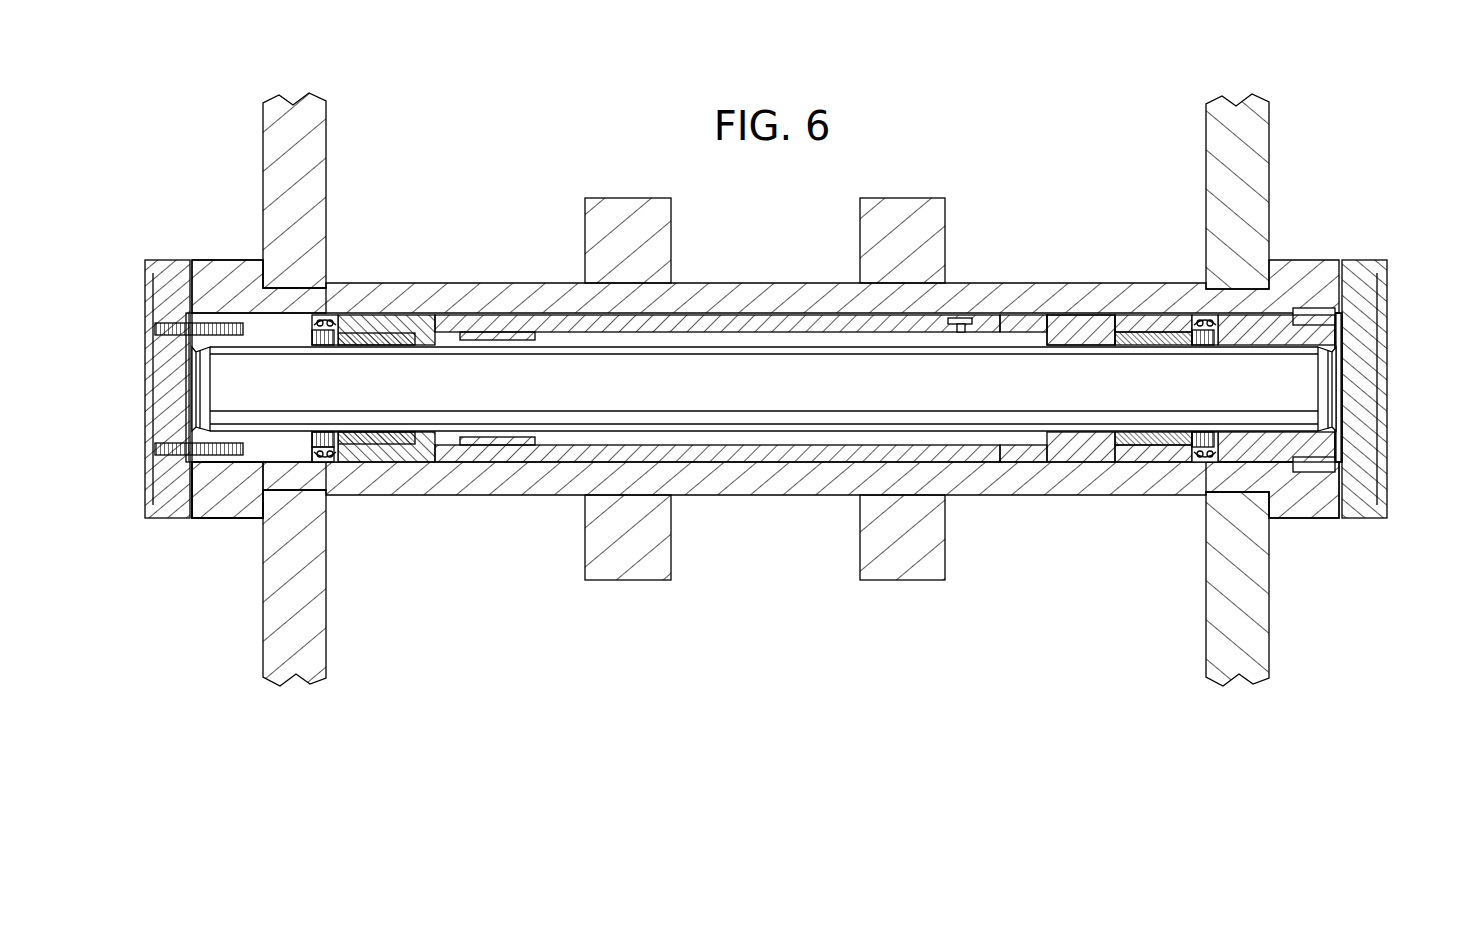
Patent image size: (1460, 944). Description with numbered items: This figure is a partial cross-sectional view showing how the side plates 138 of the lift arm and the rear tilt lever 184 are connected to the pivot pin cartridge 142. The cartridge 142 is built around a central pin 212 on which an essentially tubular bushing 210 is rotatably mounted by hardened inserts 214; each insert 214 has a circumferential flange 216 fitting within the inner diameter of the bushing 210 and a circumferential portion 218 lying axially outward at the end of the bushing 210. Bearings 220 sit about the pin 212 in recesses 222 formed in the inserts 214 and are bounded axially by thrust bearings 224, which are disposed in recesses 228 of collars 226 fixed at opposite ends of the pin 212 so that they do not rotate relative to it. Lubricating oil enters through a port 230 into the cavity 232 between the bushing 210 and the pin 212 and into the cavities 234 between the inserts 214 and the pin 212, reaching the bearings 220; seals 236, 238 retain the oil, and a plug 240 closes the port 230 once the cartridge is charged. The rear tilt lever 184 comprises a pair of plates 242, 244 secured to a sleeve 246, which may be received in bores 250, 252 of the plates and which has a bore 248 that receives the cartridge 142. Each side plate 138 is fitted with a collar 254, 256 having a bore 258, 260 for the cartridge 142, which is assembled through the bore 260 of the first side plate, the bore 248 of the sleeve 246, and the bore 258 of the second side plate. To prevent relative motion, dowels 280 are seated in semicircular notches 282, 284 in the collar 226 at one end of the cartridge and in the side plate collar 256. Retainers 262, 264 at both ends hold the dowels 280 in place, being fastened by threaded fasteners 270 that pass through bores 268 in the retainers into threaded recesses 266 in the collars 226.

The pivot pin cartridge 142 is at (800, 327).
The bushing 210 is at (725, 462).
The collar 226 is at (262, 306).
The thrust bearing 224 is at (244, 464).
The collar 254 is at (220, 495).
The threaded recess 266 is at (205, 475).
The collar 256 is at (1280, 505).
The bore 250 is at (270, 303).
The seal 236 is at (303, 442).
The side plate 138 is at (1250, 155).
The rear tilt lever 184 is at (900, 197).
The plate 242 is at (613, 582).
The plate 244 is at (893, 582).
The bore 268 is at (167, 303).
The dowel 280 is at (1343, 478).
The bore 260 is at (1292, 340).
The semicircular notch 284 is at (1317, 317).
The semicircular notch 282 is at (1328, 466).
The pin 212 is at (688, 394).
The retainer 262 is at (172, 407).
The retainer 264 is at (1357, 387).
The cavity 232 is at (695, 335).
The sleeve 246 is at (687, 483).
The bore 248 is at (805, 443).
The hardened insert 214 is at (455, 330).
The cavity 234 is at (522, 440).
The circumferential flange 216 is at (1072, 335).
The circumferential portion 218 is at (1157, 327).
The bore 252 is at (1215, 478).
The recess 228 is at (330, 314).
The bearing 220 is at (335, 468).
The seal 238 is at (320, 468).
The recess 222 is at (1200, 463).
The port 230 is at (967, 320).
The plug 240 is at (980, 320).
The bore 258 is at (252, 322).
The threaded fastener 270 is at (153, 446).